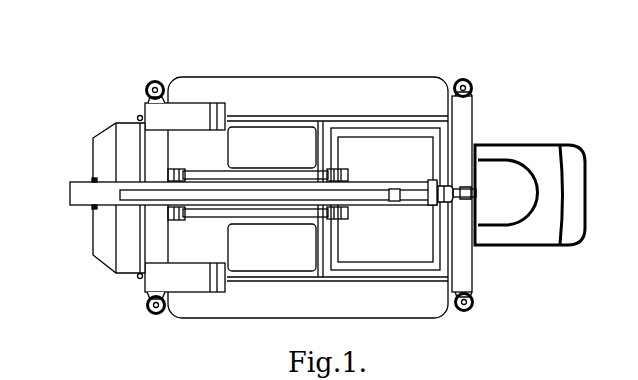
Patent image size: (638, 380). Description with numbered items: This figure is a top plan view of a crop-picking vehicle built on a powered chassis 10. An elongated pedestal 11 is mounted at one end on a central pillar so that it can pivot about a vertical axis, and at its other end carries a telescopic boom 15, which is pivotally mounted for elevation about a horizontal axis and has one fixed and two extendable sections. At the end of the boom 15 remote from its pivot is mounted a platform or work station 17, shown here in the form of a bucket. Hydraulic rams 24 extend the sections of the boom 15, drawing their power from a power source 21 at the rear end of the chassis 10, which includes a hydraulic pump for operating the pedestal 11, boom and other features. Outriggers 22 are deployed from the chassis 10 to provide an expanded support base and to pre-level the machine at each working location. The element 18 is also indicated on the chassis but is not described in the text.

The powered chassis 10 is at (308, 164).
The elongated pedestal 11 is at (232, 166).
The telescopic boom 15 is at (406, 148).
The platform or work station 17 is at (535, 176).
The mounting bolt 18 is at (53, 218).
The power source 21 is at (86, 213).
The outriggers 22 is at (322, 199).
The hydraulic rams 24 is at (298, 107).